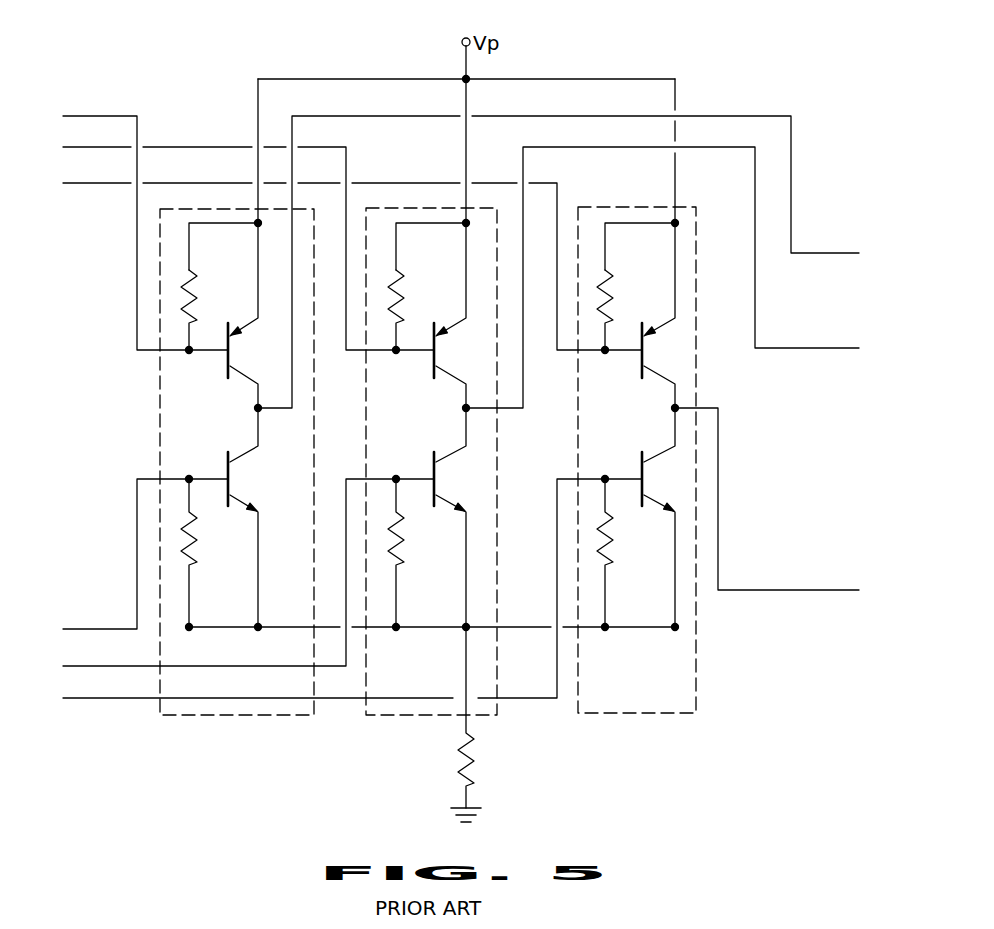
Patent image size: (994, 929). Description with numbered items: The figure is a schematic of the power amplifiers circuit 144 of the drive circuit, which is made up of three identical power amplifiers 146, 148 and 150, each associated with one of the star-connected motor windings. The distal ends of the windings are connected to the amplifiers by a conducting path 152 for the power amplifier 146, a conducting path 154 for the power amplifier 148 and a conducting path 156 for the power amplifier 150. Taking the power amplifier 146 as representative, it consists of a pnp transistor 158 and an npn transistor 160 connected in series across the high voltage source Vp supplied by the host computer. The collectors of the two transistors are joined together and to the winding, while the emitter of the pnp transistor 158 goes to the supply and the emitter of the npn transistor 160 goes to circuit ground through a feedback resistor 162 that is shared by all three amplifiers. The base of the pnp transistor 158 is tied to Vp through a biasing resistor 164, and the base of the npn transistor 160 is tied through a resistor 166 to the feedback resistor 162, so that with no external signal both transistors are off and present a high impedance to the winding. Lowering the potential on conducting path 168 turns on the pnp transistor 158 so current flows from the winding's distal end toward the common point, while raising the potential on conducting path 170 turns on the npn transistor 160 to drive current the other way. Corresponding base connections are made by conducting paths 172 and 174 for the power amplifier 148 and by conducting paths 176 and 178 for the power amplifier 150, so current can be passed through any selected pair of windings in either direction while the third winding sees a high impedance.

The power amplifiers circuit 144 is at (735, 66).
The power amplifier 146 is at (180, 209).
The power amplifier 148 is at (372, 208).
The power amplifier 150 is at (585, 207).
The conducting path 152 is at (803, 252).
The conducting path 154 is at (788, 347).
The conducting path 156 is at (770, 590).
The pnp transistor 158 is at (228, 362).
The npn transistor 160 is at (228, 470).
The feedback resistor 162 is at (478, 770).
The biasing resistor 164 is at (183, 302).
The resistor 166 is at (185, 540).
The conducting path 168 is at (100, 116).
The conducting path 170 is at (120, 628).
The conducting path 172 is at (124, 146).
The conducting path 174 is at (112, 665).
The conducting path 176 is at (93, 185).
The conducting path 178 is at (112, 697).